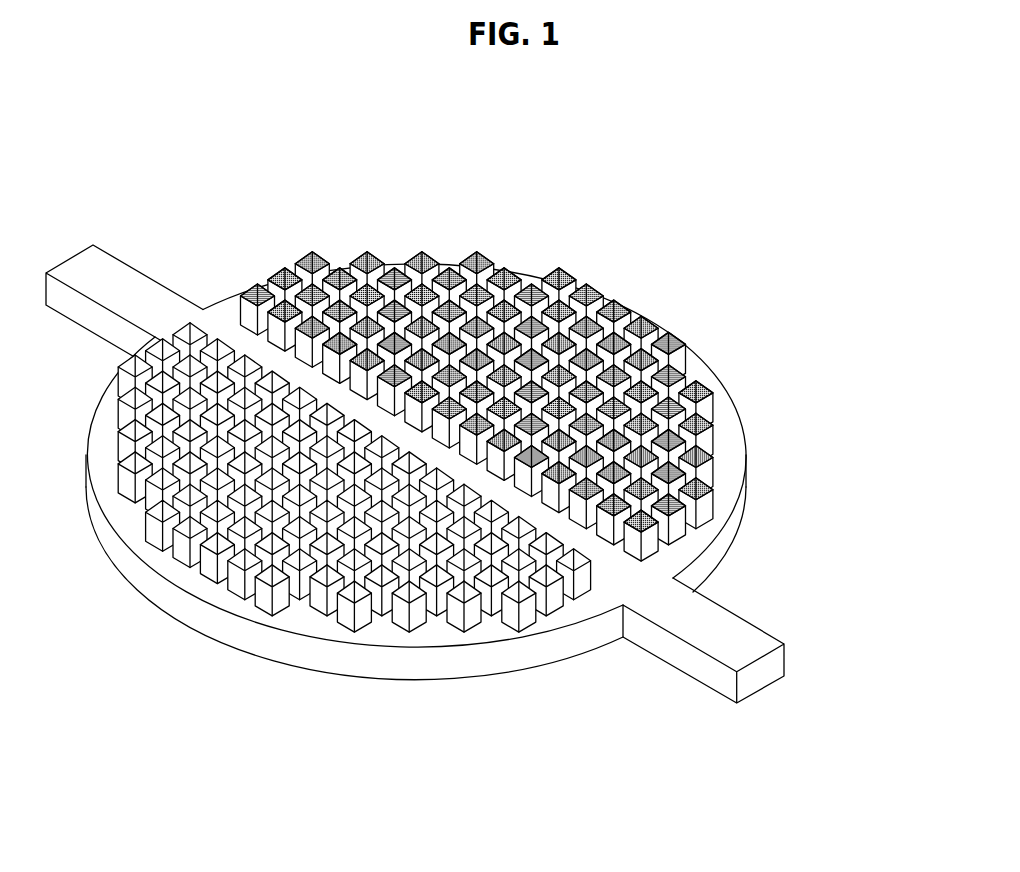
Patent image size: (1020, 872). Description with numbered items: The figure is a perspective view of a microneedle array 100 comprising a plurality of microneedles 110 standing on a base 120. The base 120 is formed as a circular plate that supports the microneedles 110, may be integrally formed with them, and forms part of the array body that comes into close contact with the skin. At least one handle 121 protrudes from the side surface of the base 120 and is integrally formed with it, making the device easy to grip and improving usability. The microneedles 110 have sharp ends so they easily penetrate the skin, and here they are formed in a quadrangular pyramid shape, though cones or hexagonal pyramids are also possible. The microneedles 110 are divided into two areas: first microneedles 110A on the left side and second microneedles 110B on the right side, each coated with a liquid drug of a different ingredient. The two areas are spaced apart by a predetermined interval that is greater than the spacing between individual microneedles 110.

The microneedle array 100 is at (435, 487).
The microneedles 110 is at (415, 537).
The first microneedles 110A is at (354, 544).
The second microneedles 110B is at (607, 527).
The base 120 is at (728, 440).
The handle 121 is at (728, 625).